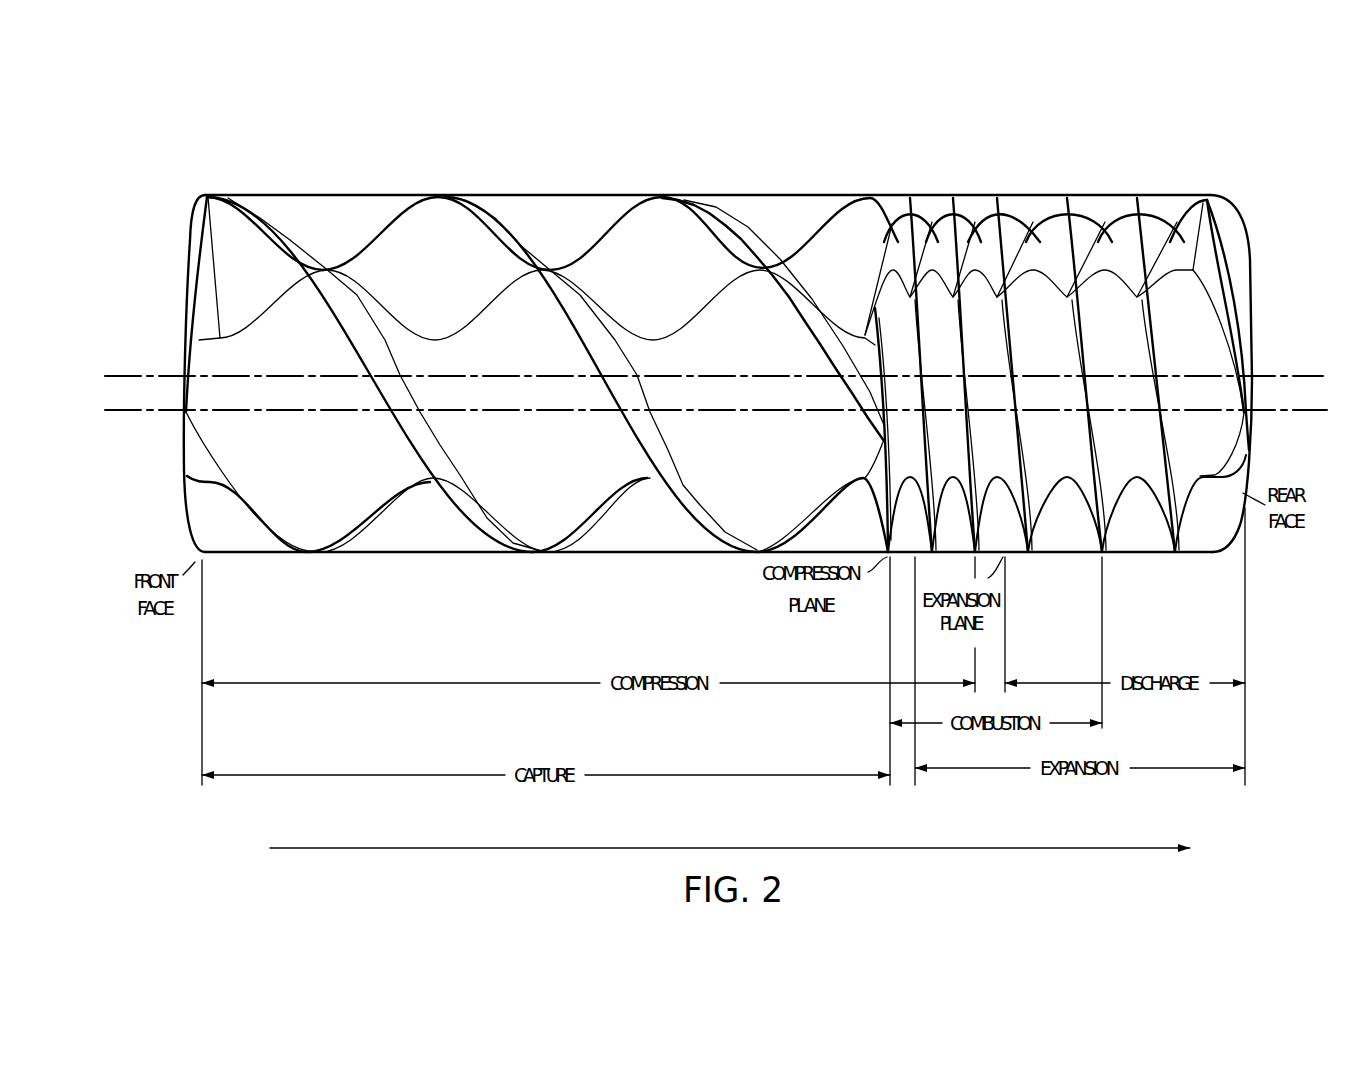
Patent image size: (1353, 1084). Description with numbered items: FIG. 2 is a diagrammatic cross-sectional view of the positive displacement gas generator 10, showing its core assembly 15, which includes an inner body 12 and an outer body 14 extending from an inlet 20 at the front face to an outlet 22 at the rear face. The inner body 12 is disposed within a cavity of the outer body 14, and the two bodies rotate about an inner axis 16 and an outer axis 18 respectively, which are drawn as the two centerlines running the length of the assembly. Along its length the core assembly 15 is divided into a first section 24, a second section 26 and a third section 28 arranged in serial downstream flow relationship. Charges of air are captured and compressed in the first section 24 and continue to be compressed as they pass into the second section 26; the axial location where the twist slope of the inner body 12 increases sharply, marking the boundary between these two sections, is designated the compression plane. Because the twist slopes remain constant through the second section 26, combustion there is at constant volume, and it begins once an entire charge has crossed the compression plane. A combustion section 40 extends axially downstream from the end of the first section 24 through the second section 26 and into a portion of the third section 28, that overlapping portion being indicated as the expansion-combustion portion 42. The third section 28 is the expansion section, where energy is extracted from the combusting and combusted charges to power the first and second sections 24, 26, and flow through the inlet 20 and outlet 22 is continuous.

The gas generator 10 is at (128, 522).
The inner body 12 is at (197, 398).
The outer body 14 is at (270, 193).
The core assembly 15 is at (233, 193).
The inner axis 16 is at (1290, 413).
The outer axis 18 is at (1313, 375).
The inlet 20 is at (200, 273).
The outlet 22 is at (1210, 247).
The first section 24 is at (894, 146).
The second section 26 is at (900, 146).
The third section 28 is at (1252, 146).
The combustion section 40 is at (1102, 623).
The expansion-combustion portion 42 is at (1005, 557).